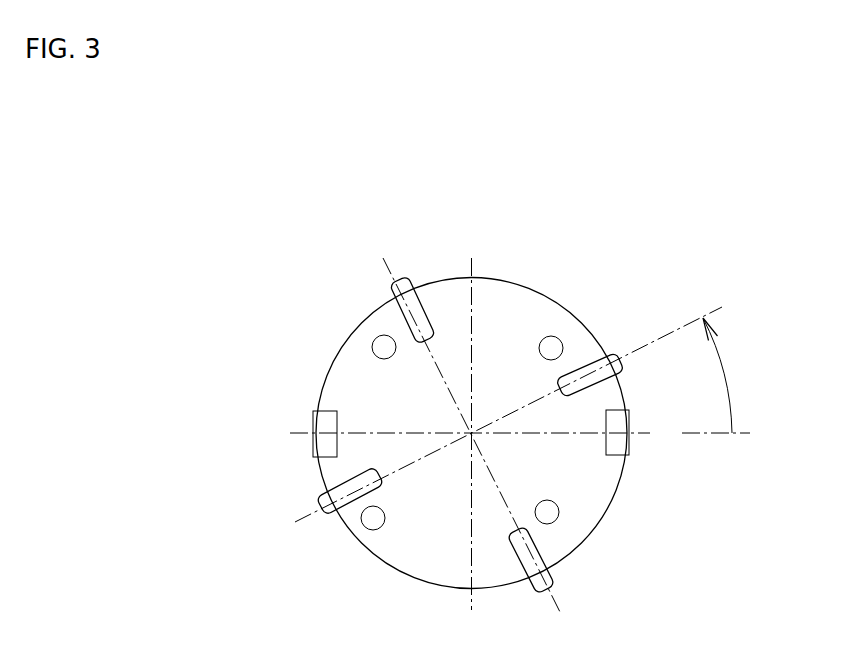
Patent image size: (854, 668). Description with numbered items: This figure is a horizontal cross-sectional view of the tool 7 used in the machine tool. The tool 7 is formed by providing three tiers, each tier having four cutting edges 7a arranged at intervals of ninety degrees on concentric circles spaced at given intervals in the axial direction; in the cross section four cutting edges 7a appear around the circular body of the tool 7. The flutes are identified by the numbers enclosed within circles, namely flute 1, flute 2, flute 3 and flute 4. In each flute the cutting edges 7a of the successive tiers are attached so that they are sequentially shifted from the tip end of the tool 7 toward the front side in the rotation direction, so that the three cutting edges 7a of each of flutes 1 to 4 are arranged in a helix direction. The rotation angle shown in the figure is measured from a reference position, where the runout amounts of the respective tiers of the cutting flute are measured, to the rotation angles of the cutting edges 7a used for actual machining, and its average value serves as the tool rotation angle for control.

The tool 7 is at (520, 307).
The cutting edges 7a is at (423, 316).
The flute number 1 is at (551, 348).
The flute number 2 is at (384, 347).
The flute number 3 is at (373, 518).
The flute number 4 is at (547, 512).